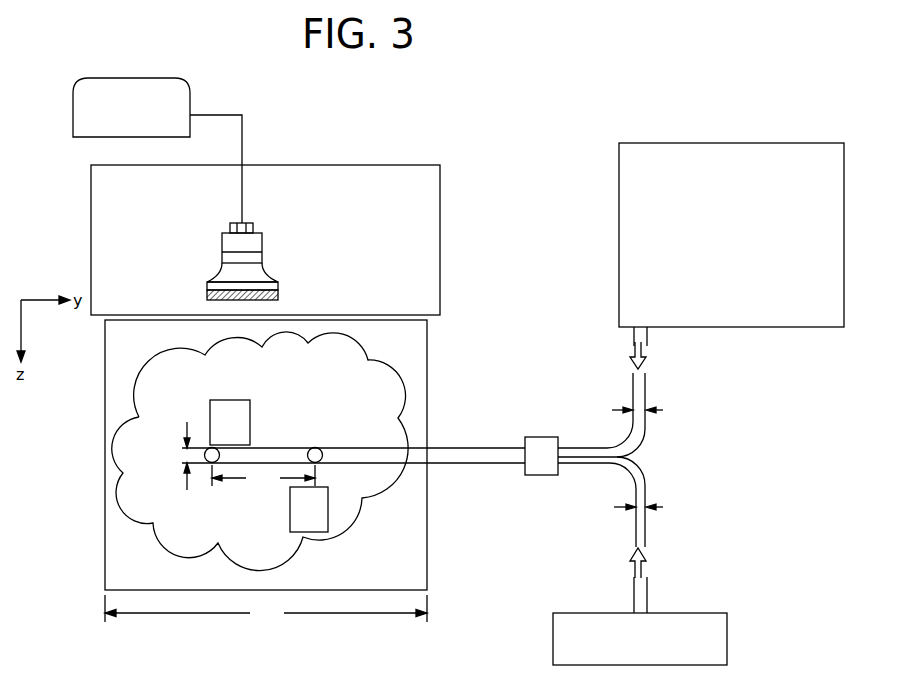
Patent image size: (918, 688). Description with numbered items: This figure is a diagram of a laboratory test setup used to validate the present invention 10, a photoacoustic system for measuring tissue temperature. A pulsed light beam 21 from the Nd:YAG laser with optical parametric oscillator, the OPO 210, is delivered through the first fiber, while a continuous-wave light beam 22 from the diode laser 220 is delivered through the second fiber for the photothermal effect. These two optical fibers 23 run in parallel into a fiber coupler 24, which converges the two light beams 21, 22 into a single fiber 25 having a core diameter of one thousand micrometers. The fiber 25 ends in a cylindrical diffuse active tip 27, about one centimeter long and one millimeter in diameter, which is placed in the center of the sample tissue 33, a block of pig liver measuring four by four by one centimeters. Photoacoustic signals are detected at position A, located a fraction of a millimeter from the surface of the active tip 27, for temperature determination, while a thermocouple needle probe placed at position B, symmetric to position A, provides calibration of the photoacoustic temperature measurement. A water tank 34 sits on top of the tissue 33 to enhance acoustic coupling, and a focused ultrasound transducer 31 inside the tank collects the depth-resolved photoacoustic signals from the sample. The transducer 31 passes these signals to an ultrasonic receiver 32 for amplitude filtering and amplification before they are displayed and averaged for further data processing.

The present invention 10 is at (560, 257).
The light beam 21 is at (641, 348).
The light beam 22 is at (641, 567).
The optical fibers 23 is at (620, 457).
The fiber coupler 24 is at (540, 476).
The optical fiber 25 is at (478, 448).
The active tip 27 is at (272, 448).
The focused ultrasound transducer 31 is at (263, 243).
The ultrasonic receiver 32 is at (73, 118).
The sample tissue 33 is at (368, 343).
The water tank 34 is at (430, 222).
The OPO 210 is at (722, 143).
The diode laser 220 is at (728, 622).